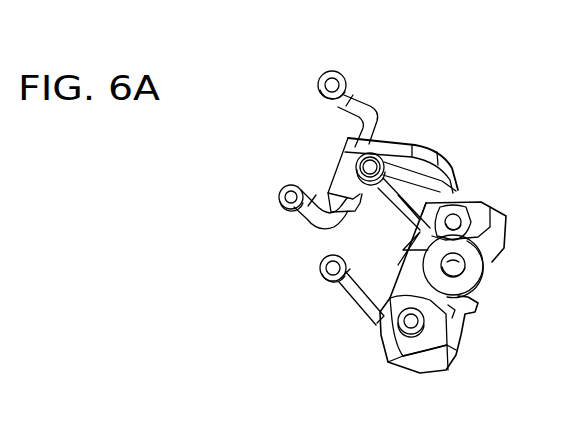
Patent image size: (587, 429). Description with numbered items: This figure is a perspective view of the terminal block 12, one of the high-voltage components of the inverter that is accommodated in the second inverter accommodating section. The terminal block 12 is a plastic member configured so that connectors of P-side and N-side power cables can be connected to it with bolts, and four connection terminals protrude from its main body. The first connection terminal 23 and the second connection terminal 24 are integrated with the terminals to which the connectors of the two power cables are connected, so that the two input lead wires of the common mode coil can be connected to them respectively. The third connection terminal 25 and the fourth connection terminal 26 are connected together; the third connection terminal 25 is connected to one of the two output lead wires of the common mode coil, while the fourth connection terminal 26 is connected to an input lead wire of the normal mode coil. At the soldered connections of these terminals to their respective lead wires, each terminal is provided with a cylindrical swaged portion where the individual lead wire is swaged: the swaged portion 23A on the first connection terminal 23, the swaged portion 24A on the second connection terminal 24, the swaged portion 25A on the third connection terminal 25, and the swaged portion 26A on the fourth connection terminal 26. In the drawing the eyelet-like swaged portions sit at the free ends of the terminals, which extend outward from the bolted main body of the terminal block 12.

The terminal block 12 is at (453, 347).
The first connection terminal 23 is at (400, 197).
The cylindrical swaged portion 23A is at (340, 153).
The second connection terminal 24 is at (366, 305).
The cylindrical swaged portion 24A is at (320, 282).
The third connection terminal 25 is at (308, 229).
The cylindrical swaged portion 25A is at (280, 189).
The fourth connection terminal 26 is at (357, 102).
The cylindrical swaged portion 26A is at (335, 72).